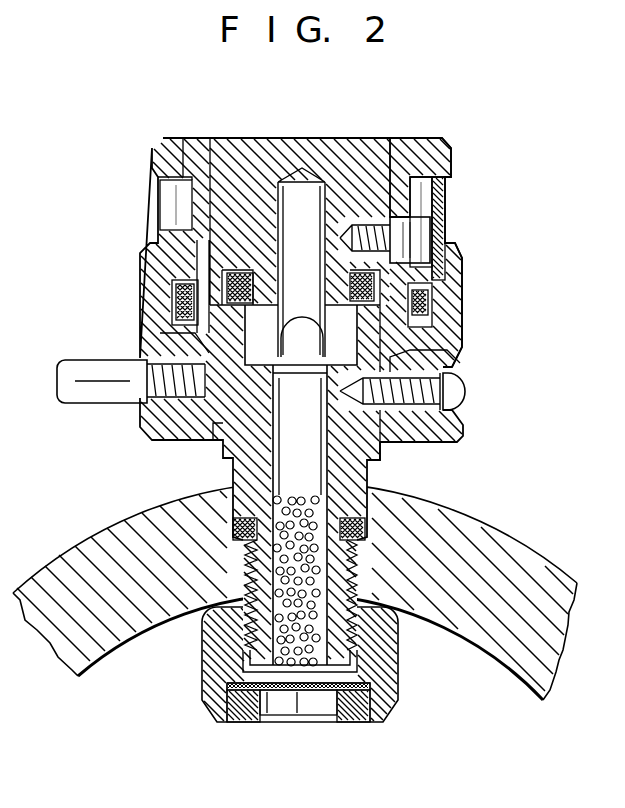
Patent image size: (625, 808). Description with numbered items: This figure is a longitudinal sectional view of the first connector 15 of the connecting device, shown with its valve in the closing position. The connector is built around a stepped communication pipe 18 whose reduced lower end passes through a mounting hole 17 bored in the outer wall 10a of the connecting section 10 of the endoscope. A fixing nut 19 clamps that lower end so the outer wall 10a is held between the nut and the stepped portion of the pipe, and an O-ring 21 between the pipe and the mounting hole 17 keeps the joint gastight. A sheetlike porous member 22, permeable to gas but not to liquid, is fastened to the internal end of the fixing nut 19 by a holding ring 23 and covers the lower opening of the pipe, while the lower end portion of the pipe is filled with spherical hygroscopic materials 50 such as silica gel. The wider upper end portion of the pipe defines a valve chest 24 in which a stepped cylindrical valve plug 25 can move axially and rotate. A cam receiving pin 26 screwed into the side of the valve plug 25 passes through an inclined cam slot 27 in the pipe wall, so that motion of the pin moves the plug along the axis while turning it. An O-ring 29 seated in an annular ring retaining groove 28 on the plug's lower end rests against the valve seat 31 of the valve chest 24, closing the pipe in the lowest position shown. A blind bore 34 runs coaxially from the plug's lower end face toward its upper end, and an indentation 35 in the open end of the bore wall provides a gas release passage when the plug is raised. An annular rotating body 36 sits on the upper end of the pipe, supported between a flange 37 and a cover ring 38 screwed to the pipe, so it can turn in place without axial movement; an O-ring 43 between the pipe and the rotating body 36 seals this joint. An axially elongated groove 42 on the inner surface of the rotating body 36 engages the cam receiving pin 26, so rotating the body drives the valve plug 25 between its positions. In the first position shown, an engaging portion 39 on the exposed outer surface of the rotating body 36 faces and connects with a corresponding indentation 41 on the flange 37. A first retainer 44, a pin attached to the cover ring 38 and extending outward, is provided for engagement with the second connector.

The connecting section 10 is at (295, 590).
The outer wall 10a is at (105, 545).
The first connector 15 is at (514, 164).
The mounting hole 17 is at (248, 566).
The communication pipe 18 is at (373, 448).
The fixing nut 19 is at (276, 695).
The O-ring 21 is at (366, 530).
The sheetlike porous member 22 is at (313, 692).
The holding ring 23 is at (238, 722).
The valve chest 24 is at (283, 368).
The valve plug 25 is at (282, 142).
The cam receiving pin 26 is at (425, 196).
The cam slot 27 is at (410, 215).
The ring retaining groove 28 is at (245, 270).
The O-ring 29 is at (235, 274).
The valve seat 31 is at (363, 296).
The blind bore 34 is at (321, 192).
The indentation 35 is at (305, 318).
The annular rotating body 36 is at (440, 232).
The flange 37 is at (428, 142).
The cover ring 38 is at (455, 350).
The engaging portion 39 is at (165, 207).
The indentation 41 is at (172, 160).
The groove 42 is at (455, 250).
The O-ring 43 is at (450, 308).
The first retainer 44 is at (87, 362).
The spherical hygroscopic materials 50 is at (320, 570).